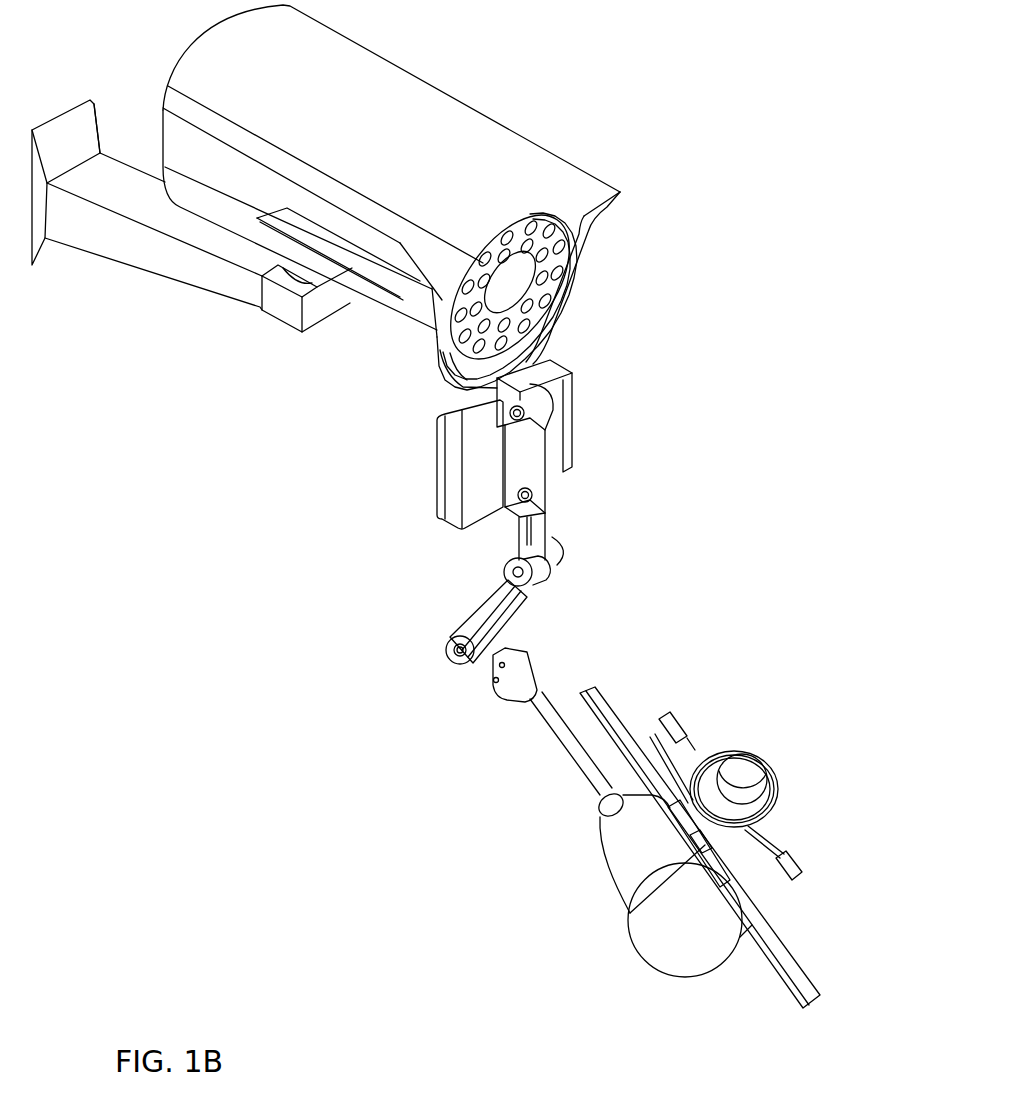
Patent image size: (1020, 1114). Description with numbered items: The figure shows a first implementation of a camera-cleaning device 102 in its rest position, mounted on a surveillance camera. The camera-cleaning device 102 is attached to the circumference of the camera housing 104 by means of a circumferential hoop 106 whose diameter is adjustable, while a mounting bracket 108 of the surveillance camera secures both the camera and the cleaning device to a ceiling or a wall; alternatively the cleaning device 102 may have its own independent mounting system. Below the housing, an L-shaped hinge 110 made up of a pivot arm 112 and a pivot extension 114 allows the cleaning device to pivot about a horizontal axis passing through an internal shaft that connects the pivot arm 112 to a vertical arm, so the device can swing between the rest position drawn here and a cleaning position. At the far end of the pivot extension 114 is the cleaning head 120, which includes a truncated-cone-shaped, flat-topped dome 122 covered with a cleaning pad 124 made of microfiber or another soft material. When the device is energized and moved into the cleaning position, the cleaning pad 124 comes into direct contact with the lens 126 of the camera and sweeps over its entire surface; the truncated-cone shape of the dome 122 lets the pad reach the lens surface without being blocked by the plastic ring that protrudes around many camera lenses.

The camera-cleaning device 102 is at (613, 535).
The camera housing 104 is at (413, 72).
The circumferential hoop 106 is at (423, 330).
The mounting bracket 108 is at (157, 273).
The L-shaped hinge 110 is at (415, 675).
The pivot arm 112 is at (487, 600).
The pivot extension 114 is at (528, 743).
The cleaning head 120 is at (722, 831).
The dome 122 is at (718, 800).
The cleaning pad 124 is at (737, 780).
The lens 126 is at (508, 283).